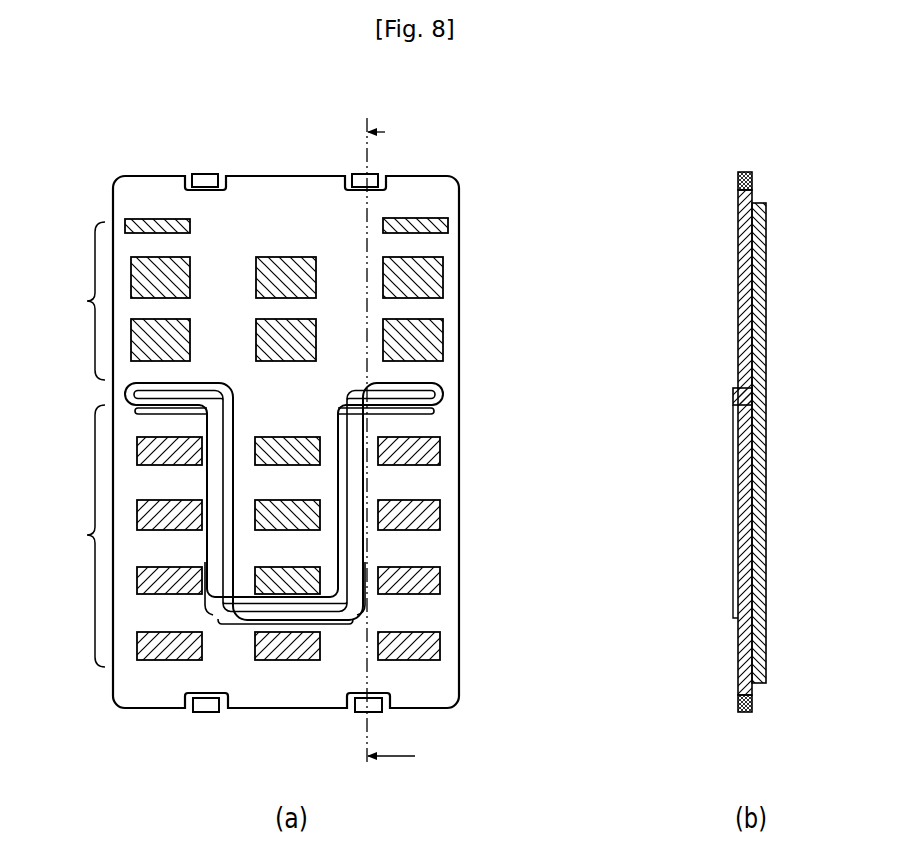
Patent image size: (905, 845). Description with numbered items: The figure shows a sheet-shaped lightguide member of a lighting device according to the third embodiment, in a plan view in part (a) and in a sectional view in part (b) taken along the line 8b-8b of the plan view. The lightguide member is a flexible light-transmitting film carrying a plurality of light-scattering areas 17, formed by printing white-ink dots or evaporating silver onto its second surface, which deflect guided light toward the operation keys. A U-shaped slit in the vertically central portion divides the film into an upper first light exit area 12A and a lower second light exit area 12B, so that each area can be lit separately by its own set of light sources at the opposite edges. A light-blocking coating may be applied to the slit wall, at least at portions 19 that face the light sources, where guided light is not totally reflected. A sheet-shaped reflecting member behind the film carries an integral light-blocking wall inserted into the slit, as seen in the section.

The section line 8b is at (398, 449).
The first light exit area 12A is at (70, 301).
The second light exit area 12B is at (71, 536).
The light-scattering areas 17 is at (286, 262).
The portions facing the light sources 19 is at (170, 413).